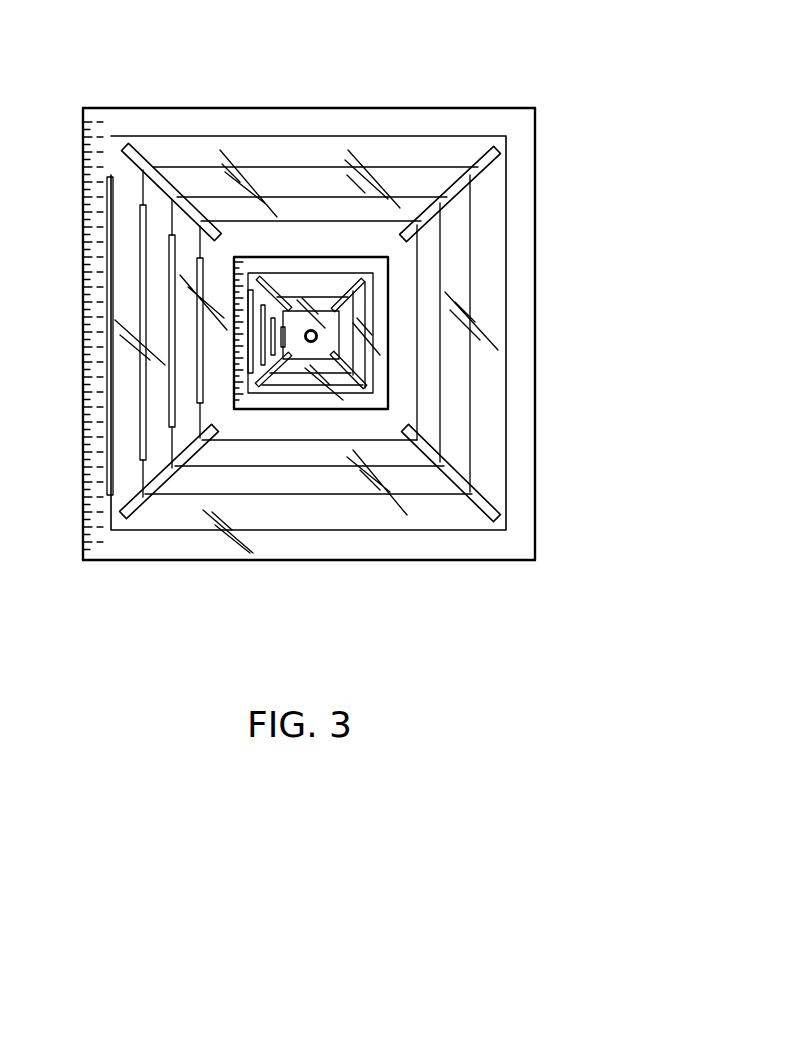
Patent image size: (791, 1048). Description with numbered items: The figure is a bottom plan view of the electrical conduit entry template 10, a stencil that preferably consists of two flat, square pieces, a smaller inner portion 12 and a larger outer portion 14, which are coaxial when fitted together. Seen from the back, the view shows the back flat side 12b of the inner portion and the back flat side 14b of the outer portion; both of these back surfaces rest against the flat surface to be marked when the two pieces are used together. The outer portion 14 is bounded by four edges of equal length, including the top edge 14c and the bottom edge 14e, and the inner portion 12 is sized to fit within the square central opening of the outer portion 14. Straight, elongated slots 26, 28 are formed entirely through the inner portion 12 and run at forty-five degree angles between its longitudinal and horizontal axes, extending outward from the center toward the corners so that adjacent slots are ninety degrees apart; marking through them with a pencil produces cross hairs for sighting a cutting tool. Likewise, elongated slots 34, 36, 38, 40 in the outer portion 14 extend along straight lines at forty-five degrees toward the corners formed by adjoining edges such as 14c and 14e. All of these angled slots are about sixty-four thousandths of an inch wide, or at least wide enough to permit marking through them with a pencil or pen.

The electrical conduit entry template 10 is at (592, 352).
The inner portion 12 is at (348, 258).
The back flat side of inner portion 12b is at (333, 286).
The outer portion 14 is at (520, 471).
The back flat side of outer portion 14b is at (488, 394).
The top edge of outer portion 14c is at (443, 110).
The bottom edge of outer portion 14e is at (387, 560).
The elongated slot 26 is at (275, 303).
The elongated slot 28 is at (266, 376).
The elongated slot 34 is at (128, 150).
The elongated slot 36 is at (142, 500).
The elongated slot 38 is at (497, 513).
The elongated slot 40 is at (485, 165).